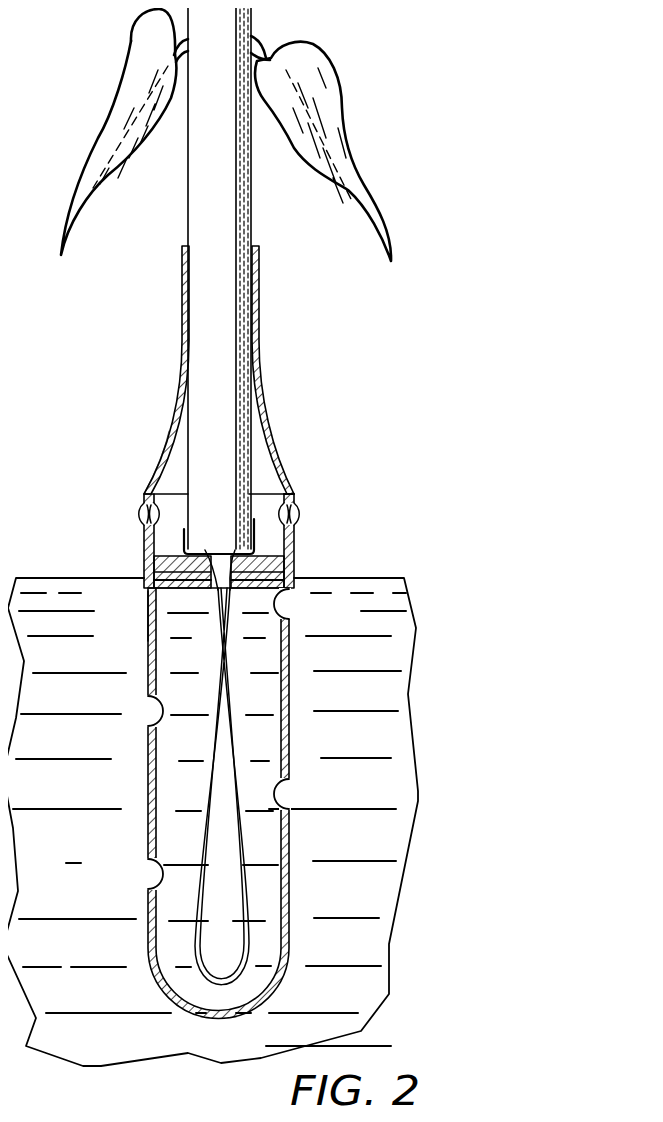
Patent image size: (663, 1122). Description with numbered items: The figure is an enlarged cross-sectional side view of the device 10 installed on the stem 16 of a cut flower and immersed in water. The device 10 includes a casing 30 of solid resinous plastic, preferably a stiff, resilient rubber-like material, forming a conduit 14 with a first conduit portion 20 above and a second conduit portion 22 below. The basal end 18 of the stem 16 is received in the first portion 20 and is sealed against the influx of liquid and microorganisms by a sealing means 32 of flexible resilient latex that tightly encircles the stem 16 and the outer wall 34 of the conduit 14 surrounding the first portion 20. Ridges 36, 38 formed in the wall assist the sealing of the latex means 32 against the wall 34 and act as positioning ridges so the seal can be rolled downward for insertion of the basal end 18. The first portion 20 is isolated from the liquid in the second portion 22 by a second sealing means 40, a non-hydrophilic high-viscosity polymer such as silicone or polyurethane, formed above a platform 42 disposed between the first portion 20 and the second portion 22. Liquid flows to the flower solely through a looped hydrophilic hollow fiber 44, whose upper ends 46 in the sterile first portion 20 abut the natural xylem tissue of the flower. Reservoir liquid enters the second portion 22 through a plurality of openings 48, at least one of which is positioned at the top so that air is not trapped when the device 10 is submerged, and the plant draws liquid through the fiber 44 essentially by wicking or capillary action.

The device 10 is at (273, 632).
The conduit 14 is at (287, 756).
The stem 16 is at (243, 218).
The basal end 18 is at (225, 412).
The first conduit portion 20 is at (145, 496).
The second conduit portion 22 is at (158, 788).
The casing 30 is at (147, 656).
The sealing means 32 is at (265, 377).
The outer wall 34 is at (293, 489).
The ridge 36 is at (297, 512).
The ridge 38 is at (296, 578).
The second sealing means 40 is at (143, 570).
The platform 42 is at (158, 590).
The hollow fiber 44 is at (237, 898).
The upper ends 46 is at (145, 520).
The openings 48 is at (157, 701).